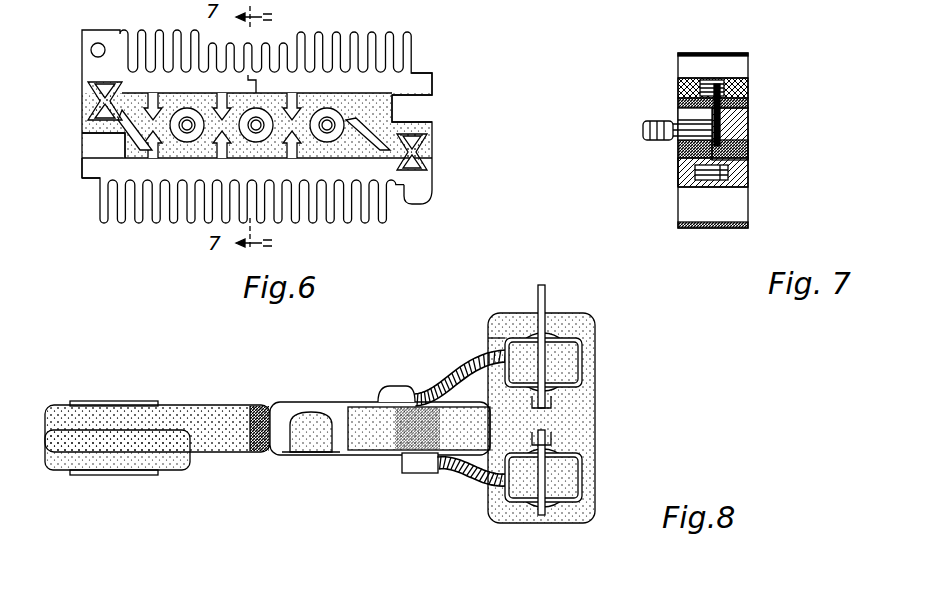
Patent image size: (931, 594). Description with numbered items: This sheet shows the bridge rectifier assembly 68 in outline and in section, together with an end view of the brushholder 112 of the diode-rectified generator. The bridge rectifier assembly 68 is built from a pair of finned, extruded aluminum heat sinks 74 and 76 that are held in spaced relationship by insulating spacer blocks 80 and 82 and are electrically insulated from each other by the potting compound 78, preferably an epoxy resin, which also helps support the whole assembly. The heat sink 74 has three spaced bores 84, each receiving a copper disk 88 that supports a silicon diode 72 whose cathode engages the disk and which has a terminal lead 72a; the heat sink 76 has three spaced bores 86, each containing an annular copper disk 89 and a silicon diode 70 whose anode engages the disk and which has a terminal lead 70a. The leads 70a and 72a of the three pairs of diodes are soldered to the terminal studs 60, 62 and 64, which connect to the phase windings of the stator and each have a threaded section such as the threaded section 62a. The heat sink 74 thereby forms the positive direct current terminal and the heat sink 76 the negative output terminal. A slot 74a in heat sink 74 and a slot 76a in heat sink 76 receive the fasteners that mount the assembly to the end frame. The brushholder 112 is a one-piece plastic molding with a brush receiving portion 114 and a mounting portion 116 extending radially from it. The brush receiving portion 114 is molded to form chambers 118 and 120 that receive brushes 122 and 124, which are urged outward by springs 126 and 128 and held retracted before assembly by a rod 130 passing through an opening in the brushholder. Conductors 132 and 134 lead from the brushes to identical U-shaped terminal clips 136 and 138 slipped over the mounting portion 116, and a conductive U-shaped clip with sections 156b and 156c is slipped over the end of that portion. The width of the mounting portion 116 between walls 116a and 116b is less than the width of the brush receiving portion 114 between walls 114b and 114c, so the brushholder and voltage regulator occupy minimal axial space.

In FIG. 6, the terminal stud 60 is at (328, 124).
In FIG. 6, the terminal stud 62 is at (254, 128).
In FIG. 7, the terminal stud 62 is at (688, 120).
In FIG. 7, the threaded section 62a is at (650, 138).
In FIG. 6, the terminal stud 64 is at (184, 128).
In FIG. 6, the bridge rectifier assembly 68 is at (416, 50).
In FIG. 7, the bridge rectifier assembly 68 is at (692, 52).
In FIG. 7, the silicon diode 70 is at (700, 168).
In FIG. 7, the terminal lead 70a is at (750, 142).
In FIG. 7, the silicon diode 72 is at (750, 106).
In FIG. 7, the terminal lead 72a is at (750, 120).
In FIG. 6, the heat sink 74 is at (420, 96).
In FIG. 7, the heat sink 74 is at (708, 65).
In FIG. 6, the slot 74a is at (412, 118).
In FIG. 6, the heat sink 76 is at (398, 175).
In FIG. 7, the heat sink 76 is at (728, 210).
In FIG. 6, the slot 76a is at (94, 148).
In FIG. 6, the insulating material 78 is at (290, 94).
In FIG. 7, the insulating material 78 is at (750, 152).
In FIG. 6, the spacer block 80 is at (426, 151).
In FIG. 6, the spacer block 82 is at (96, 114).
In FIG. 7, the bore 84 is at (722, 102).
In FIG. 7, the bore 86 is at (730, 172).
In FIG. 7, the copper disk 88 is at (716, 88).
In FIG. 7, the annular copper disk 89 is at (738, 188).
In FIG. 8, the brushholder 112 is at (338, 404).
In FIG. 8, the brush receiving portion 114 is at (590, 430).
In FIG. 8, the wall 114b is at (522, 315).
In FIG. 8, the wall 114c is at (540, 522).
In FIG. 8, the mounting portion 116 is at (220, 440).
In FIG. 8, the wall 116a is at (255, 405).
In FIG. 8, the wall 116b is at (205, 450).
In FIG. 8, the chamber 118 is at (580, 378).
In FIG. 8, the chamber 120 is at (552, 505).
In FIG. 8, the brush 122 is at (570, 360).
In FIG. 8, the brush 124 is at (572, 476).
In FIG. 8, the spring 126 is at (555, 345).
In FIG. 8, the spring 128 is at (540, 512).
In FIG. 8, the rod 130 is at (546, 296).
In FIG. 8, the conductor 132 is at (470, 368).
In FIG. 8, the conductor 134 is at (478, 478).
In FIG. 8, the terminal clip 136 is at (322, 410).
In FIG. 8, the terminal clip 138 is at (418, 466).
In FIG. 8, the section 156b is at (115, 475).
In FIG. 8, the section 156c is at (85, 401).